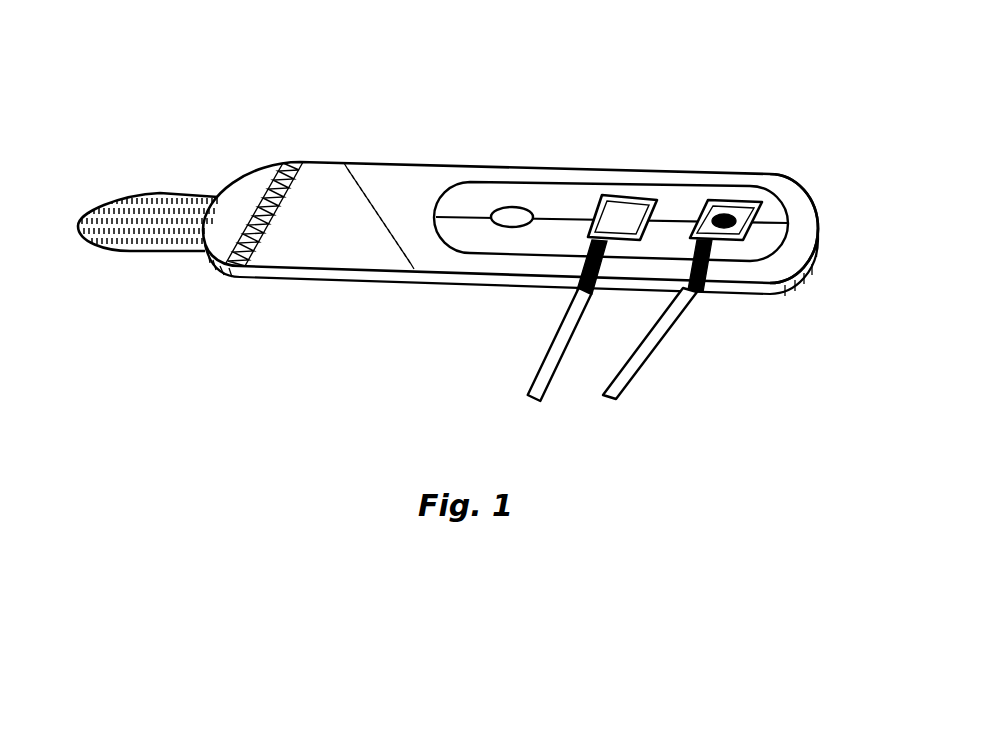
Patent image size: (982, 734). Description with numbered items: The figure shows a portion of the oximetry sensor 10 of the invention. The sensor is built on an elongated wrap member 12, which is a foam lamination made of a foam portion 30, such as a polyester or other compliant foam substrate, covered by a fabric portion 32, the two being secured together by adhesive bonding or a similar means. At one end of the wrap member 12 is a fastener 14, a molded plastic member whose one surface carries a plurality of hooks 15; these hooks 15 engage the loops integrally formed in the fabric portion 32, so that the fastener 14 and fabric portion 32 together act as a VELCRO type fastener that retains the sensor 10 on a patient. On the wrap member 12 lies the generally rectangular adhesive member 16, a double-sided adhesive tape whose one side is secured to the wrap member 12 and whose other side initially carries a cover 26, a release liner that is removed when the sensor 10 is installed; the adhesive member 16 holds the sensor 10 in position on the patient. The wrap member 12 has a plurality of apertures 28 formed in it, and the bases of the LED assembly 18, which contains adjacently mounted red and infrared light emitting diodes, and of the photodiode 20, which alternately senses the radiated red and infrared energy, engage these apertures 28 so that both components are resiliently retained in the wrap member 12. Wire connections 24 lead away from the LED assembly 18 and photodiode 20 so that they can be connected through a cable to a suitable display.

The oximetry sensor 10 is at (603, 108).
The wrap member 12 is at (285, 243).
The fastener 14 is at (128, 253).
The hooks 15 is at (150, 200).
The adhesive member 16 is at (502, 183).
The LED assembly 18 is at (773, 175).
The photodiode 20 is at (587, 237).
The wire connections 24 is at (616, 390).
The cover 26 is at (472, 203).
The apertures 28 is at (520, 207).
The foam portion 30 is at (325, 178).
The fabric portion 32 is at (348, 280).